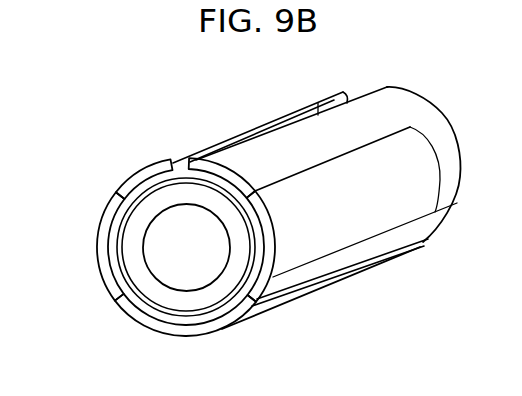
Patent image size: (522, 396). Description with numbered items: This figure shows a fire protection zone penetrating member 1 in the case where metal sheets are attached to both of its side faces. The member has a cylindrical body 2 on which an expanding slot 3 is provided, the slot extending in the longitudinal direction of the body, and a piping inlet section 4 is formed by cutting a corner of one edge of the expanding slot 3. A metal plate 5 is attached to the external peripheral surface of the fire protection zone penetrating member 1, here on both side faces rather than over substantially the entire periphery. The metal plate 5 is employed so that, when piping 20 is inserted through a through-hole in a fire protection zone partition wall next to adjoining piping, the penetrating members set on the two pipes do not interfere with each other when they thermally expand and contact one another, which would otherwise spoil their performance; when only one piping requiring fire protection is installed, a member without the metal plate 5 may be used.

The fire protection zone penetrating member 1 is at (119, 169).
The cylindrical body 2 is at (113, 263).
The piping 20 is at (141, 290).
The expanding slot 3 is at (242, 138).
The piping inlet section 4 is at (356, 90).
The metal plate 5 is at (103, 219).